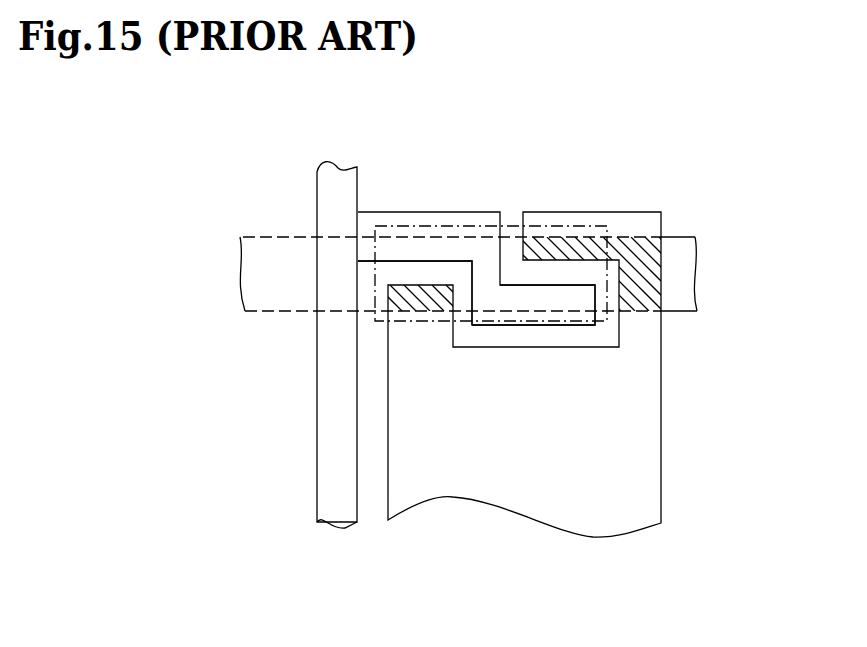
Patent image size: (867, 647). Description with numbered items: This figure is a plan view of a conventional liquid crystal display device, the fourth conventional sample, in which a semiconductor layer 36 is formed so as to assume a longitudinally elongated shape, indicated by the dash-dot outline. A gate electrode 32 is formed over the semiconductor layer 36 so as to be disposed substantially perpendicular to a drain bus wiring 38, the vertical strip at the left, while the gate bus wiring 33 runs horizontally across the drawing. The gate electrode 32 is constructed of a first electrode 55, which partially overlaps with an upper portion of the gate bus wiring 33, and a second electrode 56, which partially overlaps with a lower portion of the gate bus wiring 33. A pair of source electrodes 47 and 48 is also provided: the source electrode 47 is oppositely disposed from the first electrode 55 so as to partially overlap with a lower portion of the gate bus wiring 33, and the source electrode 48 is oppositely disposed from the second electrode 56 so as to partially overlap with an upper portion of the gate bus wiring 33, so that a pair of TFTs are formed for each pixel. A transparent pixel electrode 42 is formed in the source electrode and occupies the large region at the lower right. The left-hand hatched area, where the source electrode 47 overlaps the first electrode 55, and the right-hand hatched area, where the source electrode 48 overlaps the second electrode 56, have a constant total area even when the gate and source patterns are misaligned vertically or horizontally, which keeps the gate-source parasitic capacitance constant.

The gate electrode 32 is at (403, 272).
The gate bus wiring 33 is at (286, 287).
The semiconductor layer 36 is at (512, 223).
The drain bus wiring 38 is at (337, 432).
The transparent pixel electrode 42 is at (637, 465).
The source electrode 47 is at (423, 305).
The source electrode 48 is at (560, 247).
The first electrode 55 is at (428, 248).
The second electrode 56 is at (563, 297).